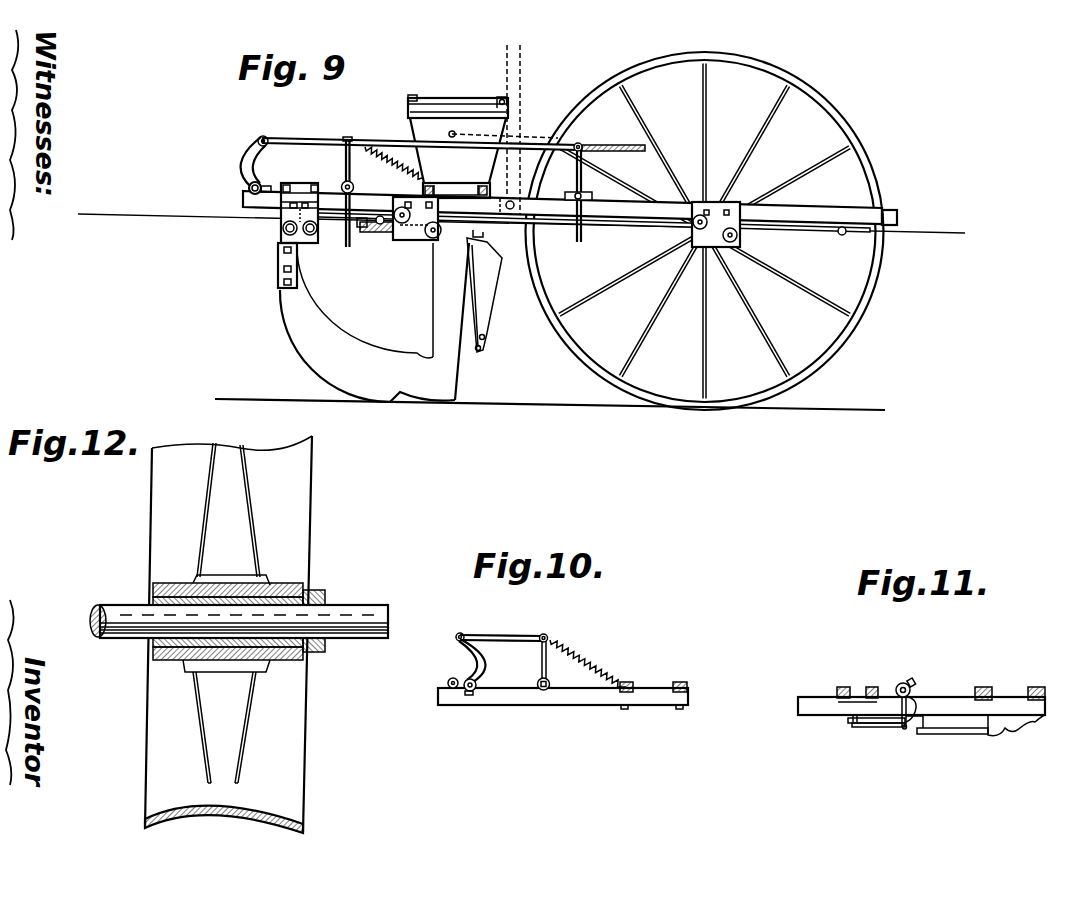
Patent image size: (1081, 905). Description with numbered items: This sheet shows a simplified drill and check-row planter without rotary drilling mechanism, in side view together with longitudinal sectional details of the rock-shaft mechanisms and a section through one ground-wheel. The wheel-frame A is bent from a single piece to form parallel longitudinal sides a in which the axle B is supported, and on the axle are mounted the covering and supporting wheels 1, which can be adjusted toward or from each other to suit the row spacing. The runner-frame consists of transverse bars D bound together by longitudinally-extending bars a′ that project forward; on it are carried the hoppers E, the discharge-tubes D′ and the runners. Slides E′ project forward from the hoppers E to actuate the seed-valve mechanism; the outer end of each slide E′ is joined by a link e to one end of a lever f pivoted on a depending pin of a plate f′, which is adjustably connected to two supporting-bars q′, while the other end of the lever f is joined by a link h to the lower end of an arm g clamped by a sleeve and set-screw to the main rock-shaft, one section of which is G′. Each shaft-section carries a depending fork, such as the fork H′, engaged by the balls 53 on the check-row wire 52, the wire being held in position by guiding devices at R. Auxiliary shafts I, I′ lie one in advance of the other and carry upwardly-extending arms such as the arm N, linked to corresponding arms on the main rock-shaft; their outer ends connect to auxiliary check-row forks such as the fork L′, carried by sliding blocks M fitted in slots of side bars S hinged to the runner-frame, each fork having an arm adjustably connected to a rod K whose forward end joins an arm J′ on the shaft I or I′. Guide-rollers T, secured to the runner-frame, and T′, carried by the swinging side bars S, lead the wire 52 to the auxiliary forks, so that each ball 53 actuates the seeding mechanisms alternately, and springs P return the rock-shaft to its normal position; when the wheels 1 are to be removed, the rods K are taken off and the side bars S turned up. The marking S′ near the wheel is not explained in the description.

In FIG. 9, the check-row wire 52 is at (521, 216).
In FIG. 9, the balls 53 is at (380, 216).
In FIG. 9, the wheel-frame A is at (570, 208).
In FIG. 9, the longitudinal sides a is at (576, 218).
In FIG. 10, the longitudinally-extending bars a′ is at (563, 708).
In FIG. 11, the longitudinally-extending bars a′ is at (943, 700).
In FIG. 9, the side bars S is at (522, 74).
In FIG. 9, the wheel spoke S′ is at (647, 203).
In FIG. 9, the hoppers E is at (483, 128).
In FIG. 9, the slides E′ is at (380, 228).
In FIG. 11, the slides E′ is at (952, 740).
In FIG. 9, the transverse bars D is at (470, 184).
In FIG. 10, the transverse bars D is at (675, 683).
In FIG. 11, the transverse bars D is at (1030, 688).
In FIG. 9, the discharge-tubes D′ is at (454, 315).
In FIG. 11, the discharge-tubes D′ is at (1015, 735).
In FIG. 9, the rod K is at (400, 142).
In FIG. 9, the arm J′ is at (245, 161).
In FIG. 10, the shaft I is at (478, 684).
In FIG. 9, the shaft I′ is at (243, 190).
In FIG. 10, the shaft I′ is at (452, 688).
In FIG. 9, the guiding devices R is at (283, 213).
In FIG. 9, the supporting-bars q′ is at (313, 185).
In FIG. 11, the supporting-bars q′ is at (871, 687).
In FIG. 9, the link e is at (337, 217).
In FIG. 11, the link e is at (892, 722).
In FIG. 10, the rock-shaft section G′ is at (538, 683).
In FIG. 11, the rock-shaft section G′ is at (902, 684).
In FIG. 9, the depending fork H′ is at (344, 243).
In FIG. 9, the guide-roller T is at (423, 238).
In FIG. 9, the guide-roller T′ is at (742, 239).
In FIG. 9, the auxiliary check-row fork L′ is at (584, 201).
In FIG. 9, the sliding blocks M is at (588, 197).
In FIG. 10, the arm N is at (470, 663).
In FIG. 10, the springs P is at (588, 662).
In FIG. 11, the arm g is at (915, 693).
In FIG. 11, the plate f′ is at (845, 703).
In FIG. 11, the lever f is at (848, 722).
In FIG. 11, the link h is at (867, 725).
In FIG. 12, the covering and supporting wheels 1 is at (311, 512).
In FIG. 12, the axle B is at (239, 611).